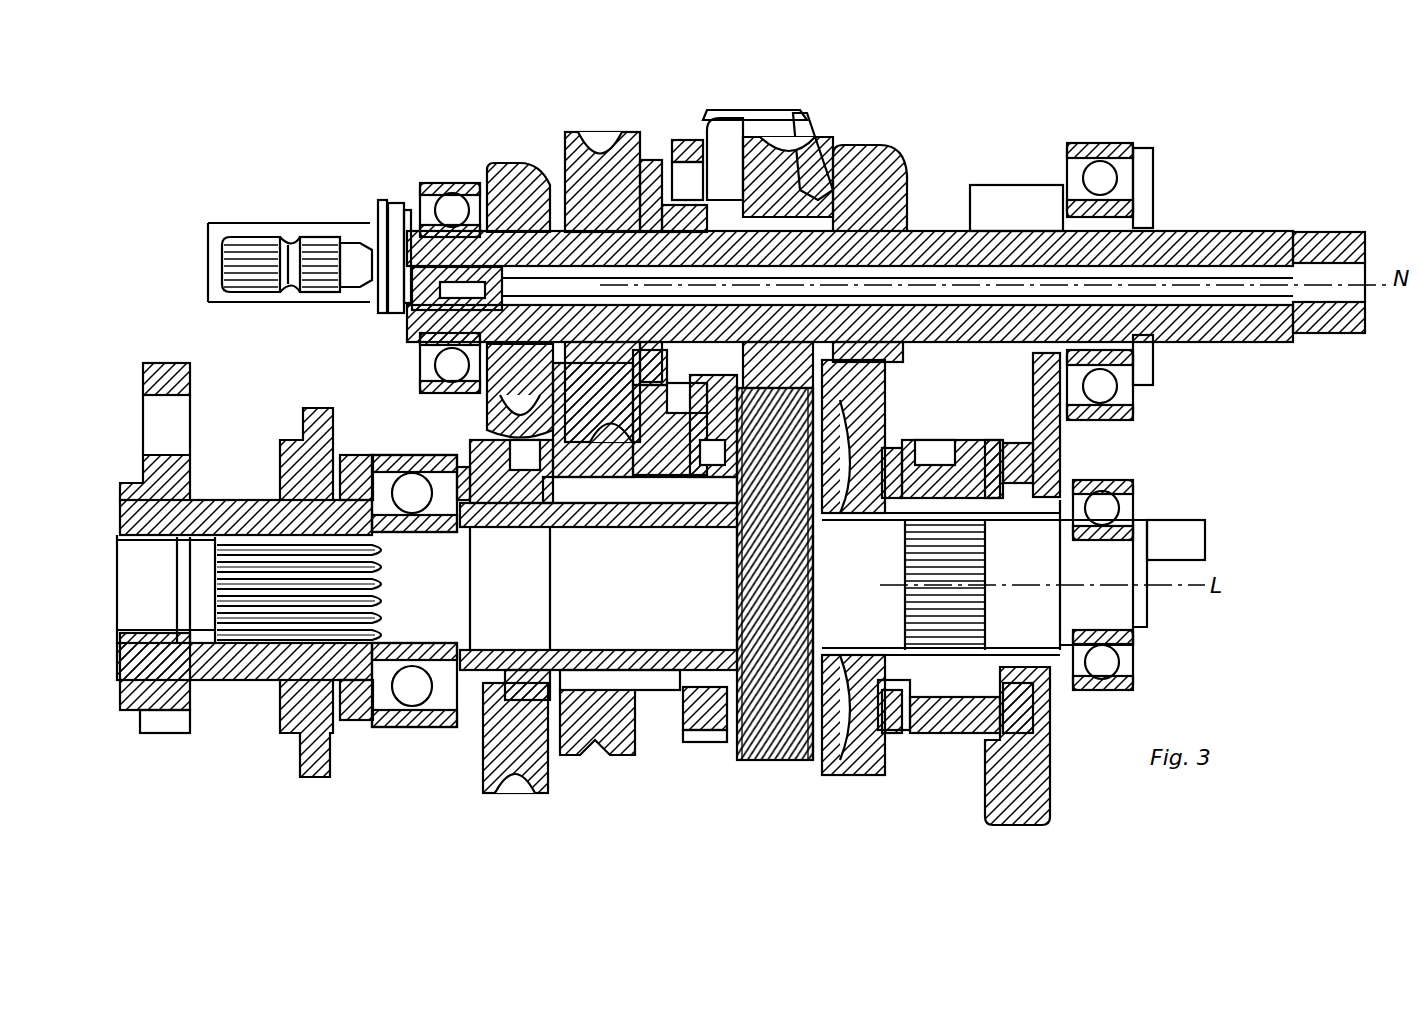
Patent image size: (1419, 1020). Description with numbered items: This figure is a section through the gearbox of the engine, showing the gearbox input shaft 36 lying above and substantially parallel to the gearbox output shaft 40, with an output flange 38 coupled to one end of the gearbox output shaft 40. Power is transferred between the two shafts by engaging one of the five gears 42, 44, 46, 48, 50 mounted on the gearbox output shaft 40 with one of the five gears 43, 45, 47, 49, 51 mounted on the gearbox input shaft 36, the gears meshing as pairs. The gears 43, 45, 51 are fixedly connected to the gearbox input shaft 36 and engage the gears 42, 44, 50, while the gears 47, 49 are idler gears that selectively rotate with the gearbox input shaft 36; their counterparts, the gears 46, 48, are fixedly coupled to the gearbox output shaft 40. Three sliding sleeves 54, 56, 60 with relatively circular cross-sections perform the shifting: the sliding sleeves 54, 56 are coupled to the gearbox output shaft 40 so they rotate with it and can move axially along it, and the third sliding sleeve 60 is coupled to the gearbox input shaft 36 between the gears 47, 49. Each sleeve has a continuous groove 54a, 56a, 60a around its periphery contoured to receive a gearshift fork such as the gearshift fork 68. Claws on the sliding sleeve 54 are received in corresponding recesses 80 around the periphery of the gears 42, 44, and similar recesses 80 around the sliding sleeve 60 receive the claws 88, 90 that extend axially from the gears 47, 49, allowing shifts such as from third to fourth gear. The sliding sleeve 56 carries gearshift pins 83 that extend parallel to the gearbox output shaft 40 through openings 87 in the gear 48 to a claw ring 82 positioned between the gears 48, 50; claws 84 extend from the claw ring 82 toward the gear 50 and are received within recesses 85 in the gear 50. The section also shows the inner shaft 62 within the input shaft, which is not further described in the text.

The gearbox input shaft 36 is at (1265, 231).
The output flange 38 is at (188, 365).
The gearbox output shaft 40 is at (1107, 610).
The gear 42 is at (1017, 800).
The gear 43 is at (1003, 193).
The gear 44 is at (855, 777).
The gear 45 is at (905, 155).
The gear 46 is at (778, 760).
The gear 47 is at (793, 142).
The gear 48 is at (592, 738).
The gear 49 is at (597, 150).
The gear 50 is at (500, 790).
The gear 51 is at (500, 165).
The sliding sleeve 54 is at (928, 722).
The continuous groove 54a is at (957, 718).
The sliding sleeve 56 is at (713, 680).
The continuous groove 56a is at (703, 742).
The sliding sleeve 60 is at (730, 170).
The continuous groove 60a is at (690, 433).
The inner shaft 62 is at (797, 256).
The gearshift fork 68 is at (792, 128).
The recesses 80 is at (698, 145).
The claw ring 82 is at (550, 690).
The gearshift pins 83 is at (605, 490).
The claws 84 is at (525, 470).
The recesses 85 is at (492, 463).
The openings 87 is at (637, 720).
The claws 88 is at (727, 112).
The claws 90 is at (658, 172).